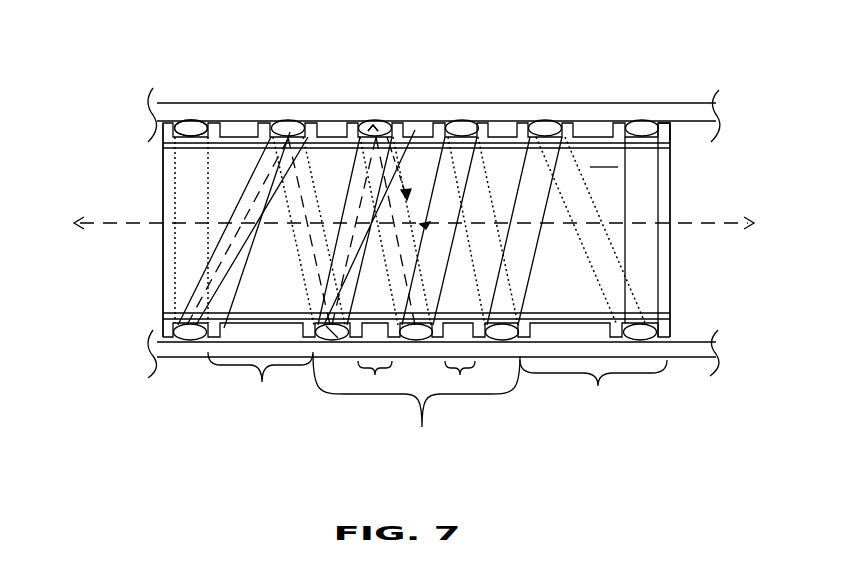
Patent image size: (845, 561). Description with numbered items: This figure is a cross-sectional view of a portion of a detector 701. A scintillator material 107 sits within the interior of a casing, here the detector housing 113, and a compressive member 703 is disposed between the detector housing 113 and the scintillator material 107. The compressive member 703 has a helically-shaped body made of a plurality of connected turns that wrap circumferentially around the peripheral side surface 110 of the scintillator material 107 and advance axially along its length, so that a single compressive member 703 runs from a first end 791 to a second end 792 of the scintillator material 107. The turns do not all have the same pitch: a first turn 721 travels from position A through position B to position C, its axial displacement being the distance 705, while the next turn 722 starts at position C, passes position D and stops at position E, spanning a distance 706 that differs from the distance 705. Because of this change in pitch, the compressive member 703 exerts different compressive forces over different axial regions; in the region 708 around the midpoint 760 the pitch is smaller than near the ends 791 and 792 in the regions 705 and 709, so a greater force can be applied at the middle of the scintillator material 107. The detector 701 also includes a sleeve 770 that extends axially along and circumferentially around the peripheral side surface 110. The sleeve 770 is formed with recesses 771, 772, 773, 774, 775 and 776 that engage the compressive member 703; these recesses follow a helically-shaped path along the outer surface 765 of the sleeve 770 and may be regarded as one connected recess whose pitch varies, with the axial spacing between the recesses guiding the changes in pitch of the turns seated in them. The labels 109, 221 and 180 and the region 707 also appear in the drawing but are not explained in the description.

The detector 701 is at (359, 183).
The compressive member 703 is at (183, 126).
The recess 771 is at (197, 125).
The recess 772 is at (294, 125).
The recess 773 is at (367, 124).
The recess 774 is at (467, 125).
The recess 775 is at (550, 125).
The recess 776 is at (650, 125).
The detector housing 113 is at (700, 112).
The sleeve 770 is at (668, 132).
The upper cladding layer 109 is at (650, 150).
The scintillator material 107 is at (604, 158).
The peripheral side surface 110 is at (660, 313).
The lower substrate 221 is at (700, 342).
The first end 791 is at (163, 173).
The second end 792 is at (670, 240).
The first turn 721 is at (245, 213).
The turn 722 is at (387, 136).
The midpoint 760 is at (420, 224).
The optical axis 180 is at (735, 223).
The outer surface 765 is at (588, 326).
The distance 705 is at (260, 382).
The distance 706 is at (375, 376).
The third section 707 is at (461, 376).
The region 708 is at (416, 404).
The region 709 is at (593, 386).
The position A is at (190, 340).
The position B is at (290, 132).
The position C is at (313, 327).
The position D is at (373, 130).
The position E is at (427, 338).